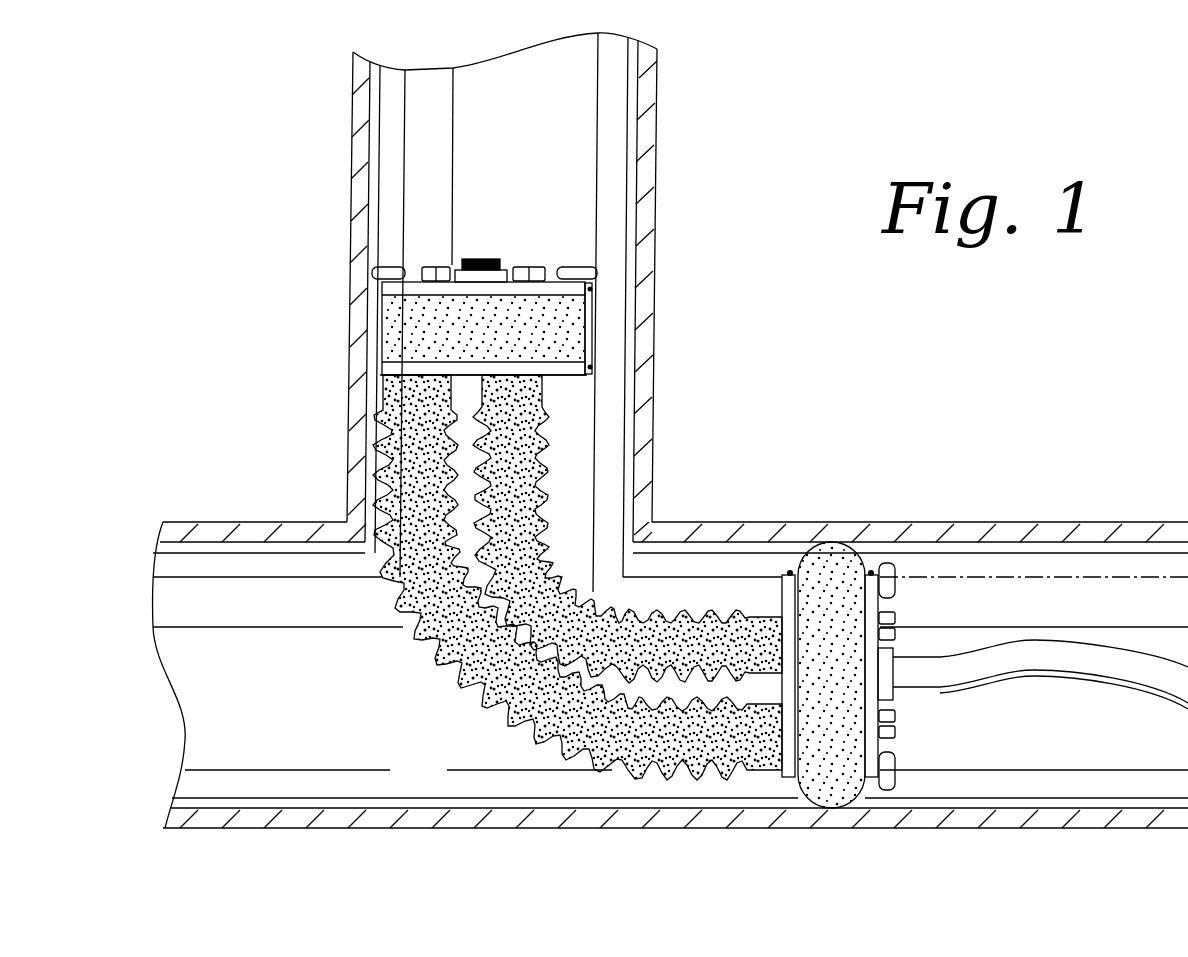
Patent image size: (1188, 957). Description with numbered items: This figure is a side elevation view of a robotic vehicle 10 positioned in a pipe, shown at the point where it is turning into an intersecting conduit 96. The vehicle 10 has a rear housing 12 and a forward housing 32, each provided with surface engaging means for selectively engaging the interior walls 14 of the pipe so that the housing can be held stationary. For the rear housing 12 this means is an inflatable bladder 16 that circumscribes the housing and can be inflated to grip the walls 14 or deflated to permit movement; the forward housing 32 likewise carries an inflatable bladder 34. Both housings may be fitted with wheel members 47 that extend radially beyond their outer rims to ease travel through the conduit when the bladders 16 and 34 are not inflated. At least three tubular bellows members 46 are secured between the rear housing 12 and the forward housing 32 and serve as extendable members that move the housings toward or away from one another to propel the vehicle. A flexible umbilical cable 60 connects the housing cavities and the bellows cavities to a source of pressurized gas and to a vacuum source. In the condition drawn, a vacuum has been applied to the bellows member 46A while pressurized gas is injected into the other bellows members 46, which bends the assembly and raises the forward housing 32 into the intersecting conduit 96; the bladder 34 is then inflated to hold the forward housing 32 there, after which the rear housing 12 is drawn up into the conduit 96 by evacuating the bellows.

The robotic vehicle 10 is at (370, 668).
The rear housing 12 is at (875, 780).
The interior walls 14 is at (650, 80).
The inflatable bladder 16 is at (830, 570).
The forward housing 32 is at (383, 367).
The inflatable bladder 34 is at (577, 322).
The tubular bellows members 46 is at (467, 700).
The bellows member 46A is at (553, 520).
The wheel members 47 is at (373, 272).
The flexible umbilical cable 60 is at (1053, 637).
The intersecting conduit 96 is at (350, 210).